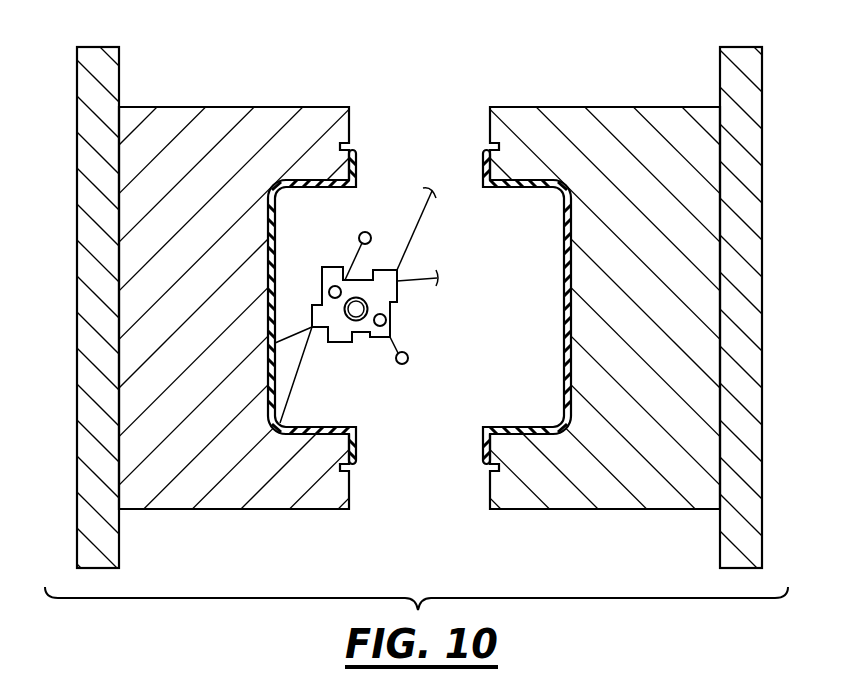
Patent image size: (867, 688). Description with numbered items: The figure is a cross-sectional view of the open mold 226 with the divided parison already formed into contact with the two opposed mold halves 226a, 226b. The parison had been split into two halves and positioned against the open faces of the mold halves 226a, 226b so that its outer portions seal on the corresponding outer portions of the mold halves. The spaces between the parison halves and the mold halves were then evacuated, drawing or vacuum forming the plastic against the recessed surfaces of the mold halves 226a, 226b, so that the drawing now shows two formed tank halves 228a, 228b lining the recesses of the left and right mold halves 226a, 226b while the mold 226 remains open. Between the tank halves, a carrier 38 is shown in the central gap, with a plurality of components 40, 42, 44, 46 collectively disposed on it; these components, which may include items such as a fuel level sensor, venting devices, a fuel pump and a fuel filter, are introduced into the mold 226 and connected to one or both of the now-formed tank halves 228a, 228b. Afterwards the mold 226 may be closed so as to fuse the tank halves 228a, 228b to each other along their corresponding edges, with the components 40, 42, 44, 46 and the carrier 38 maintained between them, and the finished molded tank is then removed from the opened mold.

The mold 226 is at (153, 42).
The mold half 226a is at (204, 130).
The mold half 226b is at (647, 130).
The tank half 228a is at (318, 425).
The tank half 228b is at (518, 190).
The carrier 38 is at (341, 338).
The component 40 is at (366, 232).
The component 42 is at (402, 364).
The component 44 is at (386, 319).
The component 46 is at (329, 292).